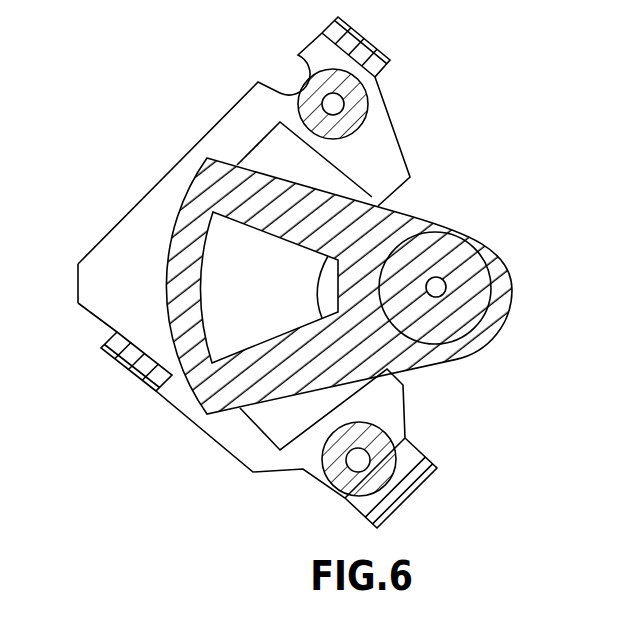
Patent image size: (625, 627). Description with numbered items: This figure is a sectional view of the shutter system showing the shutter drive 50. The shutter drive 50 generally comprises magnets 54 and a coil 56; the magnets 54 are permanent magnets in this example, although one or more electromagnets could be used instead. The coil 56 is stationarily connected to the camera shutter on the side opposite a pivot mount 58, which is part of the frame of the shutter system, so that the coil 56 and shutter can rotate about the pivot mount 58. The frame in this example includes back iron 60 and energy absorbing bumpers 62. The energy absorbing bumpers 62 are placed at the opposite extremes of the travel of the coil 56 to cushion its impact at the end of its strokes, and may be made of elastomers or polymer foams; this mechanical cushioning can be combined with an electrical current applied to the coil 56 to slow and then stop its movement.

The shutter drive 50 is at (103, 52).
The magnets 54 is at (276, 151).
The coil 56 is at (188, 236).
The pivot mount 58 is at (468, 287).
The back iron 60 is at (132, 290).
The energy absorbing bumpers 62 is at (351, 110).